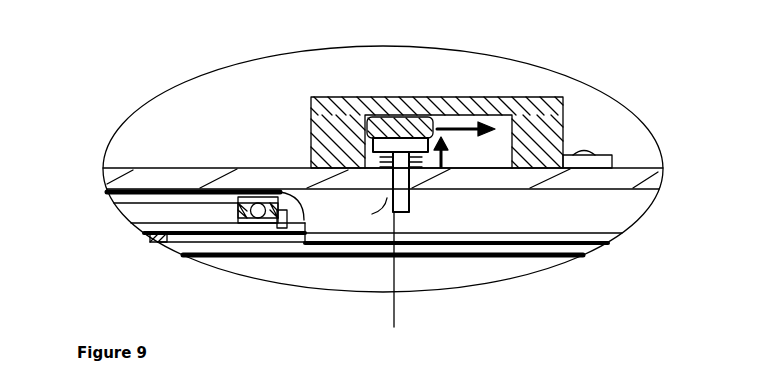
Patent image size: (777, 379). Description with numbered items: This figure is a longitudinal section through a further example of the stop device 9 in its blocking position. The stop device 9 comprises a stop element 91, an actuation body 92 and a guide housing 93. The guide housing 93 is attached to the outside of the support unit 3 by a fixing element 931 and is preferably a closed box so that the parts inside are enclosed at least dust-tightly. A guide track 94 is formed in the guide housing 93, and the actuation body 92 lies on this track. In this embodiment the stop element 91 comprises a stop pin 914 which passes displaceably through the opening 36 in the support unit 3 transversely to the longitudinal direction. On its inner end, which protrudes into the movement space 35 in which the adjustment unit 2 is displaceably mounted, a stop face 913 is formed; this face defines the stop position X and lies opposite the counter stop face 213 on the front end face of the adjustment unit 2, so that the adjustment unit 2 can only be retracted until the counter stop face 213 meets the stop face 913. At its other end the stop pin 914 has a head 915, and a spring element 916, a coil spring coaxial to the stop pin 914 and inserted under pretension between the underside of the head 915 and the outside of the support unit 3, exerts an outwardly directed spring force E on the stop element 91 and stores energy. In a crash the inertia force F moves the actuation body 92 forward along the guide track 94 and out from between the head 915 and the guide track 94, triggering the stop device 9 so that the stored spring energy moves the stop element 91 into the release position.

The adjustment unit 2 is at (130, 196).
The support unit 3 is at (153, 178).
The stop device 9 is at (372, 89).
The stop element 91 is at (368, 157).
The actuation body 92 is at (392, 122).
The guide housing 93 is at (525, 132).
The guide track 94 is at (467, 116).
The stop face 913 is at (388, 200).
The stop pin 914 is at (405, 192).
The head 915 is at (383, 139).
The spring element 916 is at (412, 128).
The fixing element 931 is at (588, 155).
The counter stop face 213 is at (291, 224).
The movement space 35 is at (355, 207).
The opening 36 is at (452, 160).
The stop position X is at (397, 305).
The spring force E is at (470, 168).
The inertia force F is at (483, 162).